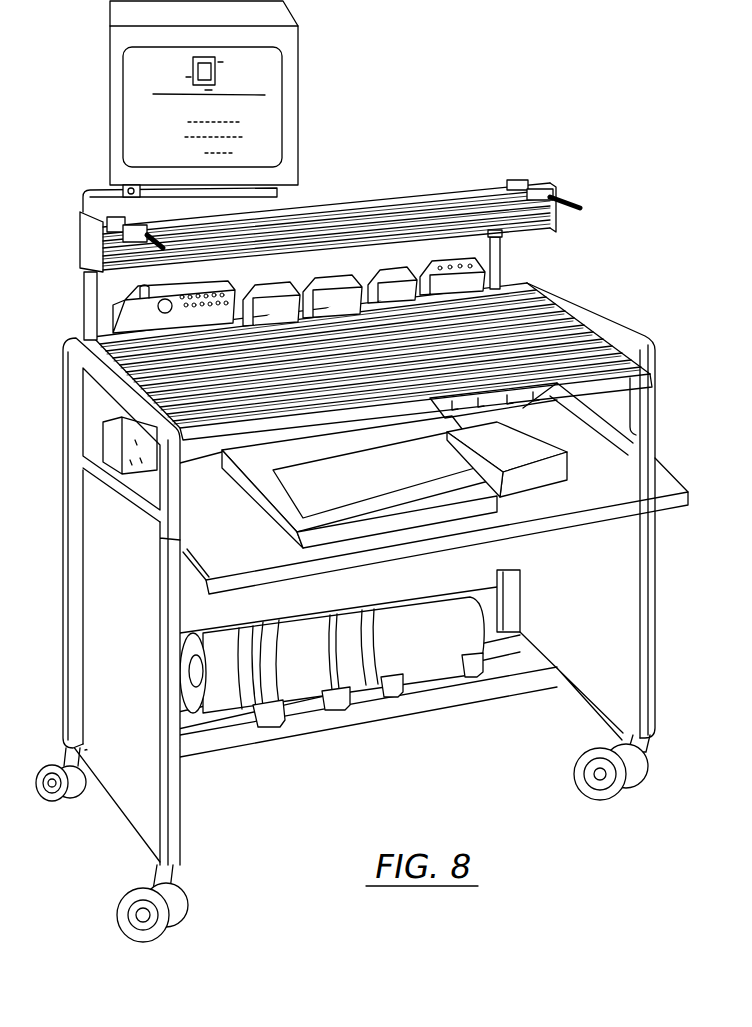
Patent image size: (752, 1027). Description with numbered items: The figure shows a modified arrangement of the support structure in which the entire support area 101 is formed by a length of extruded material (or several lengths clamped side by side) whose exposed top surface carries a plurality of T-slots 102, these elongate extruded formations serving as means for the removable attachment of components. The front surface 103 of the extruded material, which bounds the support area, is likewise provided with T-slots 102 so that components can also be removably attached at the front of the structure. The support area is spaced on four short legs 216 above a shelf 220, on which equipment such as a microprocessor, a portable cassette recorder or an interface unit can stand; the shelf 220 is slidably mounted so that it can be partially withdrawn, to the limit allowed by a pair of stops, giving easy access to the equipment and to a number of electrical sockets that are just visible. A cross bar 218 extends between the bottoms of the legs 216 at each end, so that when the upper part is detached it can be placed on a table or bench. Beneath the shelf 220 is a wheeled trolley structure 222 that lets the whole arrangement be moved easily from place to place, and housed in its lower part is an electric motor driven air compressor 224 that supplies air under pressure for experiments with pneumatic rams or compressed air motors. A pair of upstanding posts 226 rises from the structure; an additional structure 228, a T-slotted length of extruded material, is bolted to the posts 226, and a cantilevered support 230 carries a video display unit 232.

The support area 101 is at (560, 322).
The T-slots 102 is at (590, 313).
The front surface 103 is at (600, 385).
The legs 216 is at (645, 388).
The cross bar 218 is at (597, 420).
The shelf 220 is at (645, 472).
The wheeled trolley structure 222 is at (193, 793).
The electric motor driven air compressor 224 is at (304, 684).
The upstanding posts 226 is at (500, 262).
The additional structure 228 is at (442, 206).
The cantilevered support 230 is at (292, 191).
The video display unit 232 is at (294, 104).